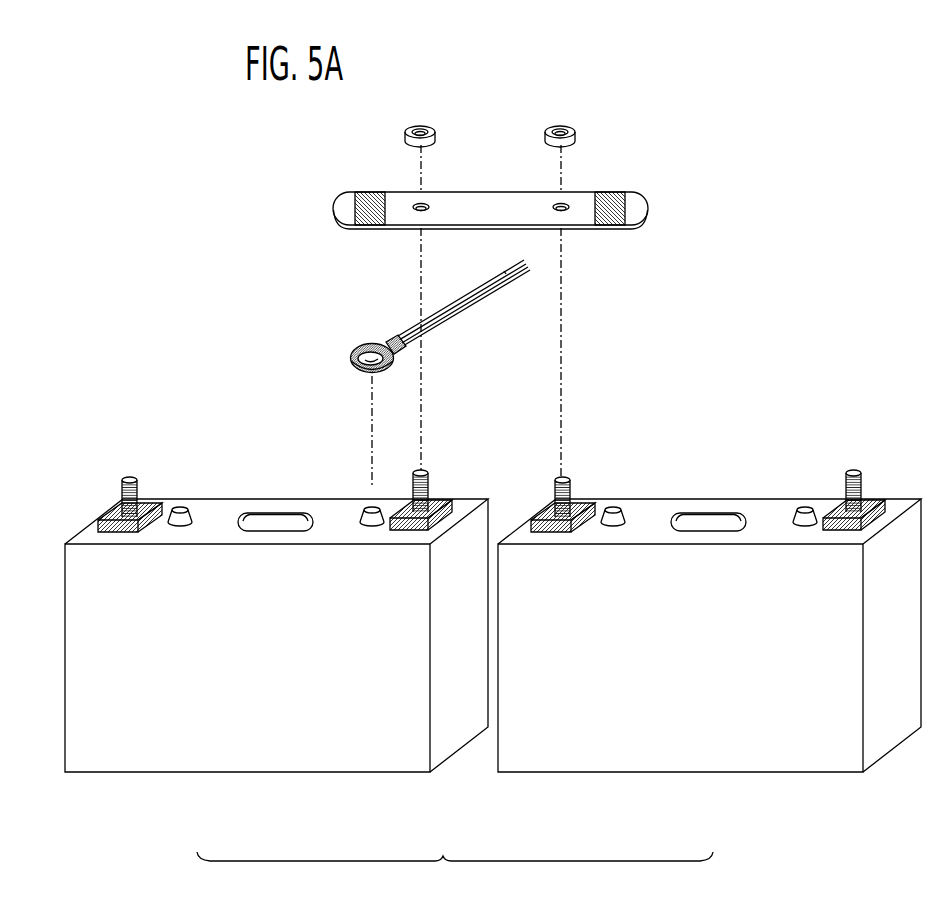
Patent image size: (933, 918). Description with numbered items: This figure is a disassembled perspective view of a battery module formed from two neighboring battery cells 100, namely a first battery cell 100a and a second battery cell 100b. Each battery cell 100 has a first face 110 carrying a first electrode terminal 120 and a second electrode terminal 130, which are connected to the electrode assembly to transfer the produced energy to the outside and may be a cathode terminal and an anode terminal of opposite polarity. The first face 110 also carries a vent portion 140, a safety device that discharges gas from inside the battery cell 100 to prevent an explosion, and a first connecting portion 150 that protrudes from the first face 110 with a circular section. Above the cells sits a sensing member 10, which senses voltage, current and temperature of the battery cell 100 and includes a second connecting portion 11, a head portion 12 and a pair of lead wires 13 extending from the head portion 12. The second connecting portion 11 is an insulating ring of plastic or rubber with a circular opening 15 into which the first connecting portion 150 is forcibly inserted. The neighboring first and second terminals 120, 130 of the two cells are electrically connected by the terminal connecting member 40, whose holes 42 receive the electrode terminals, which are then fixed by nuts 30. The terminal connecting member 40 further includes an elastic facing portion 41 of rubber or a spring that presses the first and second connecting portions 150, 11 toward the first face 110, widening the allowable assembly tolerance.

The sensing member 10 is at (391, 326).
The second connecting portion 11 is at (357, 370).
The head portion 12 is at (397, 338).
The lead wires 13 is at (473, 286).
The opening 15 is at (367, 345).
The nuts 30 is at (431, 122).
The terminal connecting member 40 is at (490, 177).
The facing portion 41 is at (343, 193).
The hole 42 is at (557, 203).
The battery cell 100 is at (455, 874).
The first battery cell 100a is at (245, 776).
The second battery cell 100b is at (697, 772).
The first face 110 is at (343, 513).
The first electrode terminal 120 is at (430, 488).
The second electrode terminal 130 is at (131, 478).
The vent portion 140 is at (275, 518).
The first connecting portion 150 is at (180, 508).